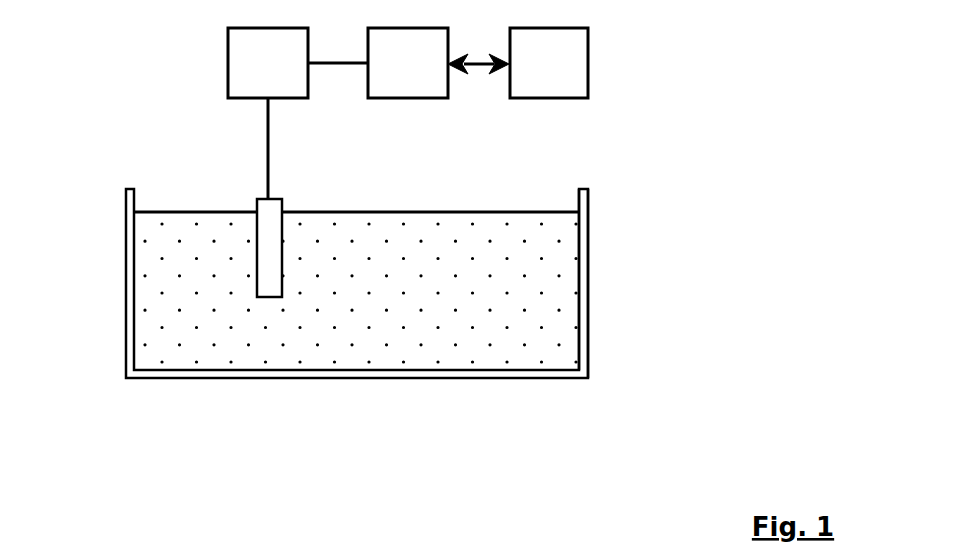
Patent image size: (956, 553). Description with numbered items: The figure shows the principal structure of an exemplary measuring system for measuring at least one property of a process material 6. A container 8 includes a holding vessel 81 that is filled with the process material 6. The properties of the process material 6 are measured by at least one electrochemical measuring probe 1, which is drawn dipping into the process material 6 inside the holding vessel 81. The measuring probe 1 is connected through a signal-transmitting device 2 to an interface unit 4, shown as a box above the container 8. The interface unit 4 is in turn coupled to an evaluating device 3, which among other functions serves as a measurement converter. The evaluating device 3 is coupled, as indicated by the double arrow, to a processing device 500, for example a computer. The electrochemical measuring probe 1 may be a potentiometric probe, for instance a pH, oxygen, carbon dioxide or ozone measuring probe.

The measuring probe 1 is at (285, 220).
The signal-transmitting device 2 is at (266, 150).
The evaluating device 3 is at (408, 63).
The interface unit 4 is at (268, 63).
The processing device 500 is at (549, 63).
The process material 6 is at (155, 278).
The container 8 is at (609, 411).
The holding vessel 81 is at (583, 278).